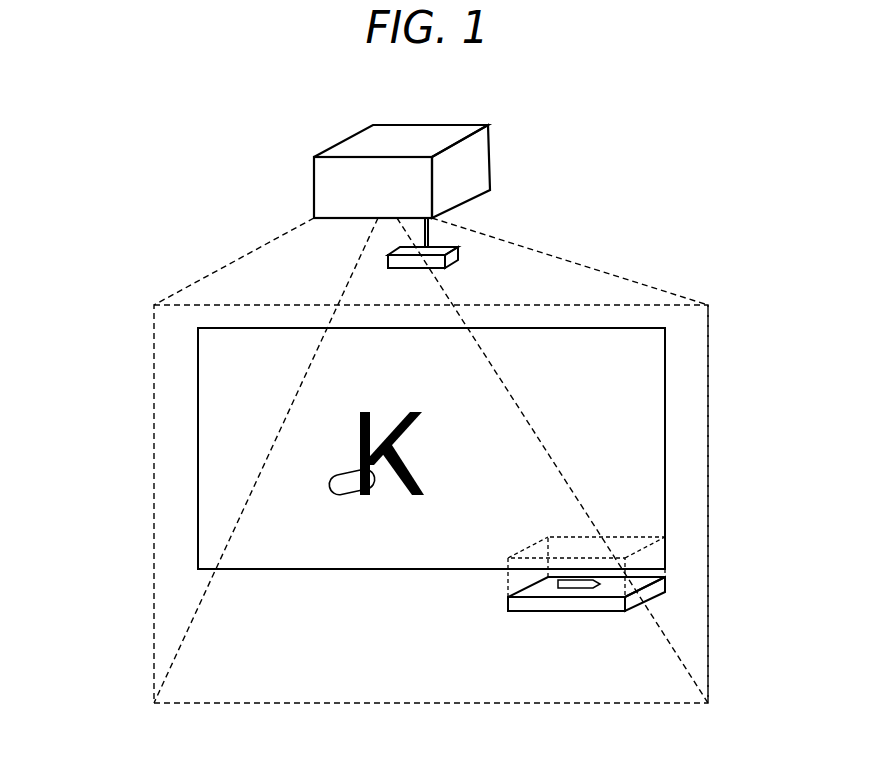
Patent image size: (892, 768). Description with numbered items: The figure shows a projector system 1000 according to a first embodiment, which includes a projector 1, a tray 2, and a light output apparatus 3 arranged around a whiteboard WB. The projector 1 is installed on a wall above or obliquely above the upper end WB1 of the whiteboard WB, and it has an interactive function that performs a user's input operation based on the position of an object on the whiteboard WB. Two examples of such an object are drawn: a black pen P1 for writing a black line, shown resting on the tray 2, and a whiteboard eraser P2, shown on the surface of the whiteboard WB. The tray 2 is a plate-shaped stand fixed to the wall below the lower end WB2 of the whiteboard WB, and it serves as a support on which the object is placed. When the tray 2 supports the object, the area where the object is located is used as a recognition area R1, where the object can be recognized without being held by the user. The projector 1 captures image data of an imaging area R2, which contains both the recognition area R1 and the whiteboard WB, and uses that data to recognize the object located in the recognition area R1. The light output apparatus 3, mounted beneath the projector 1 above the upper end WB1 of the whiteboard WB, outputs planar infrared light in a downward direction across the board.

The projector system 1000 is at (680, 108).
The projector 1 is at (432, 130).
The light output apparatus 3 is at (455, 258).
The tray 2 is at (530, 608).
The whiteboard WB is at (665, 392).
The upper end of whiteboard WB1 is at (279, 328).
The lower end of whiteboard WB2 is at (333, 569).
The recognition area R1 is at (532, 552).
The imaging area R2 is at (686, 514).
The black pen P1 is at (573, 589).
The whiteboard eraser P2 is at (349, 494).